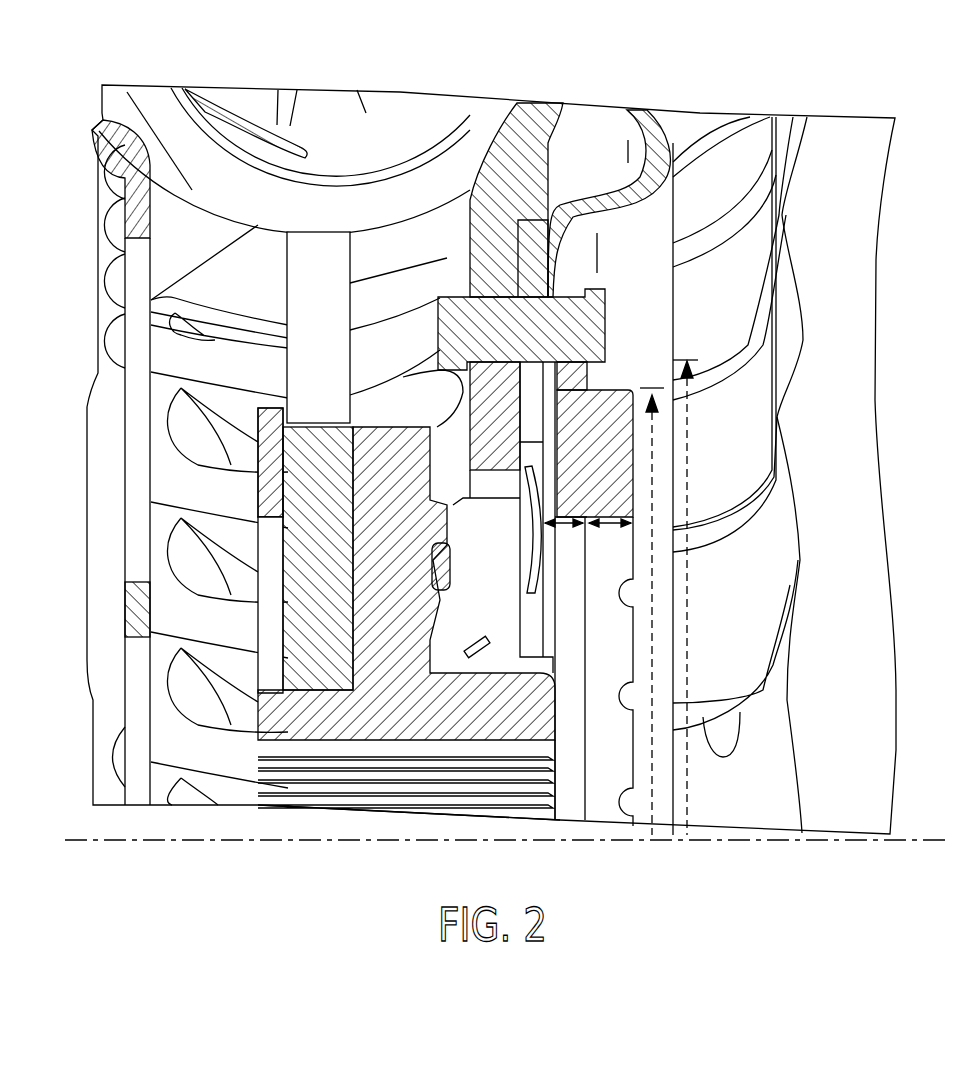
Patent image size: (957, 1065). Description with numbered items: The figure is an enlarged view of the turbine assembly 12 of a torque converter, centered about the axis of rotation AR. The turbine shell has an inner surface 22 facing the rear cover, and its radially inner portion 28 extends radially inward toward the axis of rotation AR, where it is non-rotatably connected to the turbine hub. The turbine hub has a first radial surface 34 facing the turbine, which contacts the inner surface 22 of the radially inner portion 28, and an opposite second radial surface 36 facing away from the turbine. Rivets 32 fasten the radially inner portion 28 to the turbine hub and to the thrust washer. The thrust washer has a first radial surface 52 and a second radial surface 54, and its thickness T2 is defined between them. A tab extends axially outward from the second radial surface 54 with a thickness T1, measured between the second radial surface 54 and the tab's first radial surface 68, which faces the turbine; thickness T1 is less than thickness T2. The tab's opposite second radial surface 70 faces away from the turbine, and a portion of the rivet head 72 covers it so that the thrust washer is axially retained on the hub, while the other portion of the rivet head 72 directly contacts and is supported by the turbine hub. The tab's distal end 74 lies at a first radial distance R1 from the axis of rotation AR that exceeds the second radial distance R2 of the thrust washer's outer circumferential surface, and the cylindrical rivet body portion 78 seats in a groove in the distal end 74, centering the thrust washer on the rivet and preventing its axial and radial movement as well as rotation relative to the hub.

The turbine assembly 12 is at (792, 138).
The inner surface 22 is at (573, 240).
The radially inner portion 28 is at (543, 247).
The rivets 32 is at (618, 308).
The first radial surface 34 is at (543, 457).
The second radial surface 36 is at (532, 530).
The first radial surface 52 is at (633, 513).
The second radial surface 54 is at (585, 532).
The first radial surface 68 is at (557, 392).
The second radial surface 70 is at (605, 386).
The rivet head 72 is at (607, 343).
The distal end 74 is at (543, 200).
The rivet body portion 78 is at (518, 220).
The first radial distance R1 is at (693, 467).
The second radial distance R2 is at (651, 607).
The thickness T1 is at (565, 528).
The thickness T2 is at (612, 528).
The axis of rotation AR is at (907, 838).